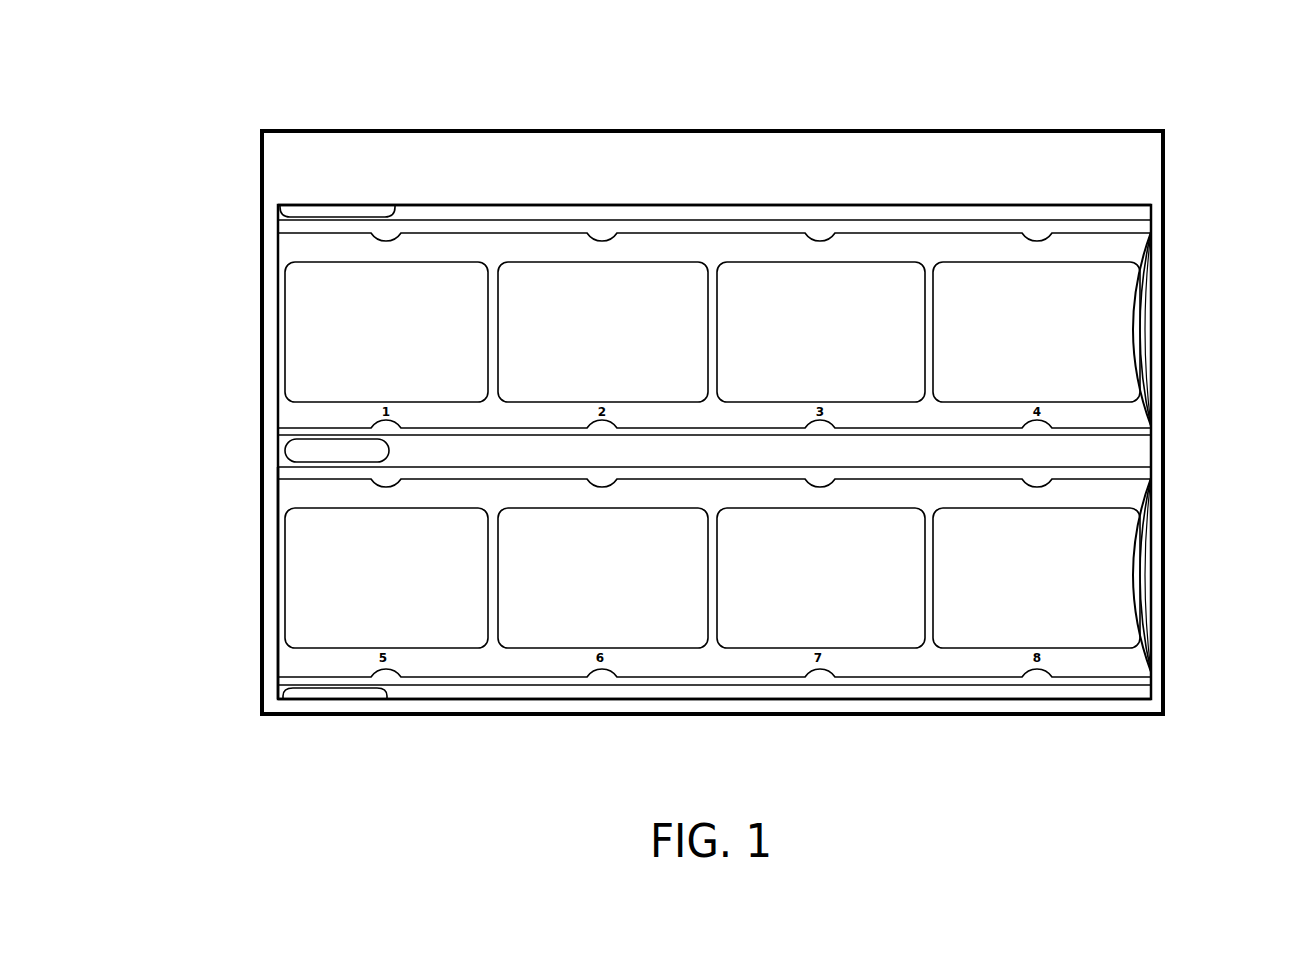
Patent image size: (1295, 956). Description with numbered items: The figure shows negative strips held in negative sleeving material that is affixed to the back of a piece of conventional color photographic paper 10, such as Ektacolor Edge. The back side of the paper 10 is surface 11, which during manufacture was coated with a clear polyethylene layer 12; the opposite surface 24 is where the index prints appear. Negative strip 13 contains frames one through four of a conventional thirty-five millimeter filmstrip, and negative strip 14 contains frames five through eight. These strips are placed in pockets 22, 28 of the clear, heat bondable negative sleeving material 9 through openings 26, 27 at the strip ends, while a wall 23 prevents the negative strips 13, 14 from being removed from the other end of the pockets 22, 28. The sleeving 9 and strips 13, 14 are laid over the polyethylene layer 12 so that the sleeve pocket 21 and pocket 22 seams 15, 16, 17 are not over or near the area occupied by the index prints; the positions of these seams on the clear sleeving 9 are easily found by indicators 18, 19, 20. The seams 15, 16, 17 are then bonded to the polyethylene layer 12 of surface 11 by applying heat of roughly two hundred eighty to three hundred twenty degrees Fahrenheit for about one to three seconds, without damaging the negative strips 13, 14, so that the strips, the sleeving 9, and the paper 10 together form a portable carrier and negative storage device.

The photographic paper 10 is at (275, 38).
The back surface 11 is at (333, 162).
The polyethylene layer 12 is at (472, 162).
The pocket 28 is at (567, 223).
The seam 15 is at (745, 210).
The sleeve pocket 21 is at (1018, 228).
The front surface 24 is at (260, 150).
The indicator 18 is at (283, 210).
The wall 23 is at (275, 278).
The negative strip 13 is at (303, 332).
The indicator 19 is at (295, 447).
The negative sleeving material 9 is at (273, 513).
The negative strip 14 is at (302, 585).
The indicator 20 is at (327, 690).
The seam 17 is at (898, 692).
The pocket 22 is at (1058, 685).
The opening 26 is at (1153, 297).
The seam 16 is at (1133, 448).
The opening 27 is at (1152, 588).